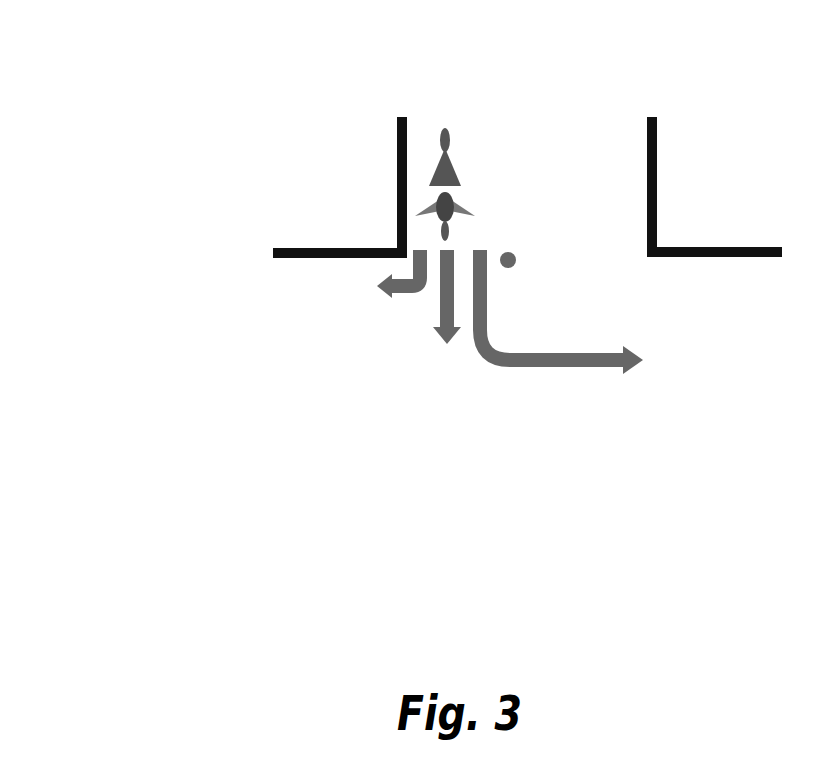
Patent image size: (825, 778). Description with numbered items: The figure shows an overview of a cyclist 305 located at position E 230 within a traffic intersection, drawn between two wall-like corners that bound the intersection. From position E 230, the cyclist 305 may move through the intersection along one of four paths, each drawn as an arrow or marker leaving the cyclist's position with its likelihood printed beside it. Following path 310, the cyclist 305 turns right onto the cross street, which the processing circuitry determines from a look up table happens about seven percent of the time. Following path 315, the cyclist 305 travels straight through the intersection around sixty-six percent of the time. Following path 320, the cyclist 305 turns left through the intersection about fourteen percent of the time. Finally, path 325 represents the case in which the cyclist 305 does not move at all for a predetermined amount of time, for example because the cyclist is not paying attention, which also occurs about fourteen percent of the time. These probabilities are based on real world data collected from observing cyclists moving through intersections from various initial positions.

The position E 230 is at (152, 87).
The cyclist 305 is at (462, 182).
The path 310 is at (402, 277).
The path 315 is at (447, 320).
The path 320 is at (550, 360).
The path 325 is at (511, 250).